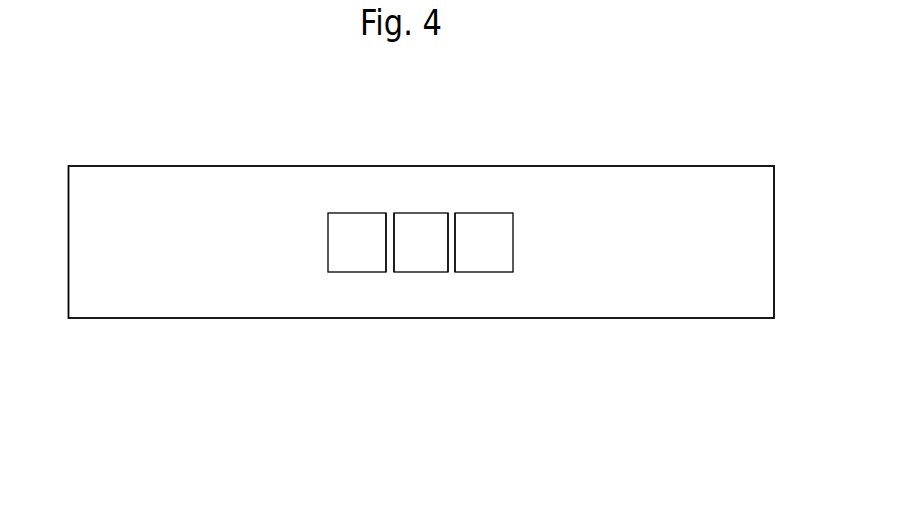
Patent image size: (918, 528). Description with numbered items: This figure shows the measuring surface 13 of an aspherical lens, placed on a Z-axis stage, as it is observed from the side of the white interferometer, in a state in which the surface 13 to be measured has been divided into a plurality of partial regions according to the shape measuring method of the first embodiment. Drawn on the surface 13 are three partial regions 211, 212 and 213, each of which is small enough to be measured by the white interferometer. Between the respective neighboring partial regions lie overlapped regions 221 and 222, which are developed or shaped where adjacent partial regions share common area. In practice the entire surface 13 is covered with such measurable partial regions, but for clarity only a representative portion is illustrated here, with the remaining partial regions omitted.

The measuring surface 13 is at (717, 287).
The partial region 211 is at (350, 223).
The partial region 212 is at (423, 227).
The partial region 213 is at (483, 220).
The overlapped region 221 is at (390, 267).
The overlapped region 222 is at (449, 267).